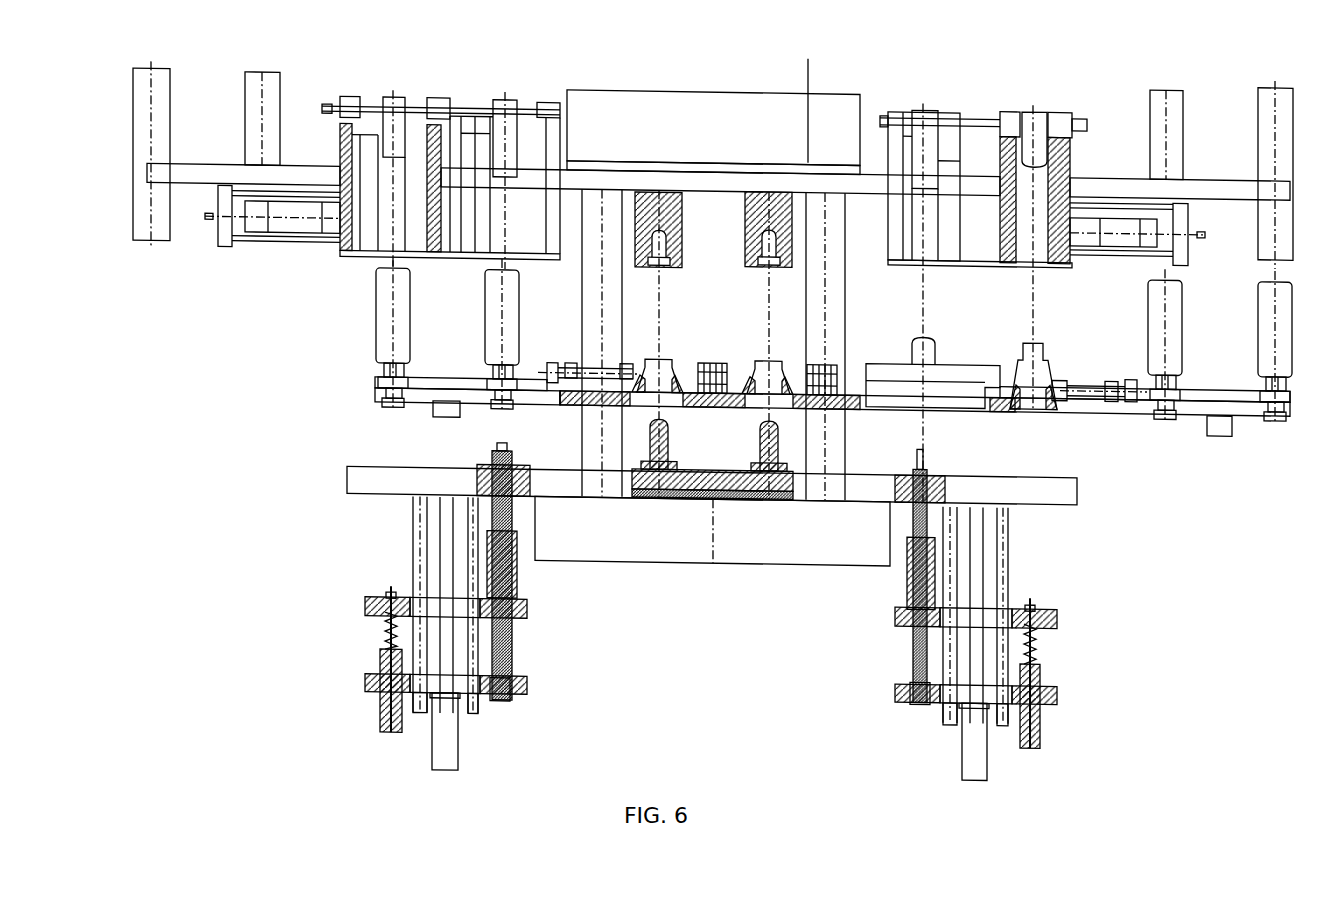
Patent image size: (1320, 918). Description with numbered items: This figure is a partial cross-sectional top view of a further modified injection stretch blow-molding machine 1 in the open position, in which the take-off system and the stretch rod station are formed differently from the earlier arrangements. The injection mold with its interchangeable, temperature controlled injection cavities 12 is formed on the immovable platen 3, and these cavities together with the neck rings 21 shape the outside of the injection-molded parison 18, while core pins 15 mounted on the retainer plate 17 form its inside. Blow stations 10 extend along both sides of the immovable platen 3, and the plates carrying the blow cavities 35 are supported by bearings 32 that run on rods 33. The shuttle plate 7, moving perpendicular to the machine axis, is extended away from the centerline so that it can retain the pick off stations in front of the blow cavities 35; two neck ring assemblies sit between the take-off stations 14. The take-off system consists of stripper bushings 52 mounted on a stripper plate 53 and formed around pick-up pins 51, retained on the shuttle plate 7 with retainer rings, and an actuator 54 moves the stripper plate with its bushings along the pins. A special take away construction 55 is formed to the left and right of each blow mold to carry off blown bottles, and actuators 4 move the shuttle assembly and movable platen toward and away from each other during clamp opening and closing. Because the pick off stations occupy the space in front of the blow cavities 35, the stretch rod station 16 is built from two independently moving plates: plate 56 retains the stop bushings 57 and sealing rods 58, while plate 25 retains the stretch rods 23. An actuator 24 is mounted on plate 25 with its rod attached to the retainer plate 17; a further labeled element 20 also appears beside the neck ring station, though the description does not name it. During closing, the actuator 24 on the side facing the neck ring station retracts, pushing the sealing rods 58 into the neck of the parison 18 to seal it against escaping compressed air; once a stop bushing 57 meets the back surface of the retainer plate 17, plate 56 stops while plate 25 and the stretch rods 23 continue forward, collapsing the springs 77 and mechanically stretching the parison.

The injection stretch blow-molding machine 1 is at (730, 116).
The immovable platen 3 is at (838, 103).
The actuators 4 is at (778, 117).
The shuttle plate 7 is at (1113, 400).
The blow stations 10 is at (1063, 142).
The injection cavities 12 is at (812, 103).
The take-off stations 14 is at (377, 403).
The core pins 15 is at (758, 422).
The stretch rod station 16 is at (982, 688).
The retainer plate 17 is at (1052, 486).
The parison 18 is at (1042, 337).
The centering cone 20 is at (780, 362).
The neck rings 21 is at (647, 358).
The stretch rods 23 is at (915, 647).
The actuator 24 is at (970, 766).
The retainer plate for stretch rods 25 is at (1053, 692).
The bearings 32 is at (1012, 110).
The rods 33 is at (982, 114).
The blow molds 35 is at (1058, 142).
The pick-up pins 51 is at (373, 408).
The stripper bushings 52 is at (377, 373).
The stripper plate 53 is at (427, 377).
The actuator 54 is at (433, 421).
The take away construction 55 is at (280, 89).
The retainer plate for stop bushings and sealing rods 56 is at (1058, 602).
The stop bushings 57 is at (907, 590).
The sealing rods 58 is at (910, 504).
The springs 77 is at (1037, 647).